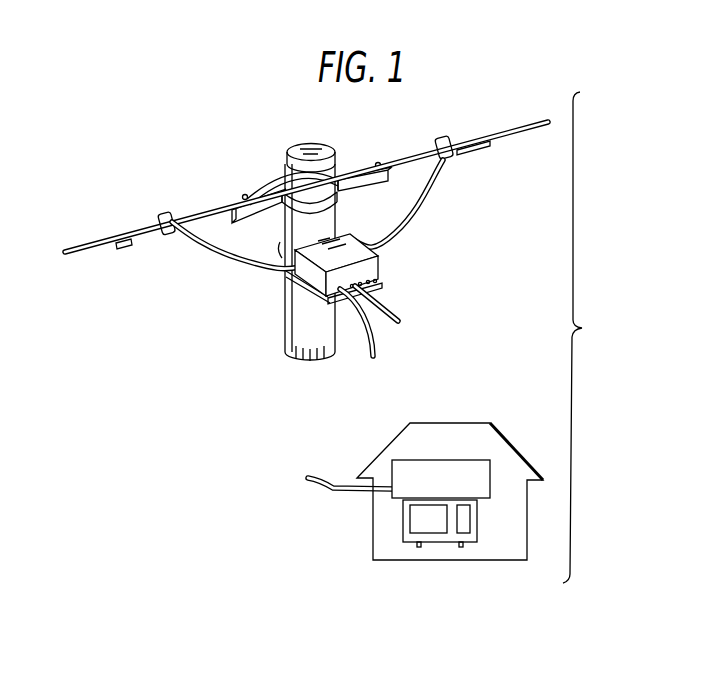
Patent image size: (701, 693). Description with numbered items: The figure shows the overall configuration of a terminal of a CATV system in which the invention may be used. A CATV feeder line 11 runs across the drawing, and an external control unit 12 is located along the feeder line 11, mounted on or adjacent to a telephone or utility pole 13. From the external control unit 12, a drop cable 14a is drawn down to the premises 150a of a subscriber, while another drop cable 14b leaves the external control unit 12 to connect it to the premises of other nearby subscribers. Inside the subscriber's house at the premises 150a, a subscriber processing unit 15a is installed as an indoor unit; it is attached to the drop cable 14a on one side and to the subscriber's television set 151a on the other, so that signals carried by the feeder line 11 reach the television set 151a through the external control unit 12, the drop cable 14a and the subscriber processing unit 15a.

The CATV feeder line 11 is at (143, 243).
The external control unit 12 is at (372, 262).
The telephone or utility pole 13 is at (326, 145).
The drop cable 14a is at (372, 333).
The drop cable 14b is at (386, 296).
The subscriber processing unit 15a is at (434, 460).
The premises 150a is at (504, 436).
The television set 151a is at (477, 521).